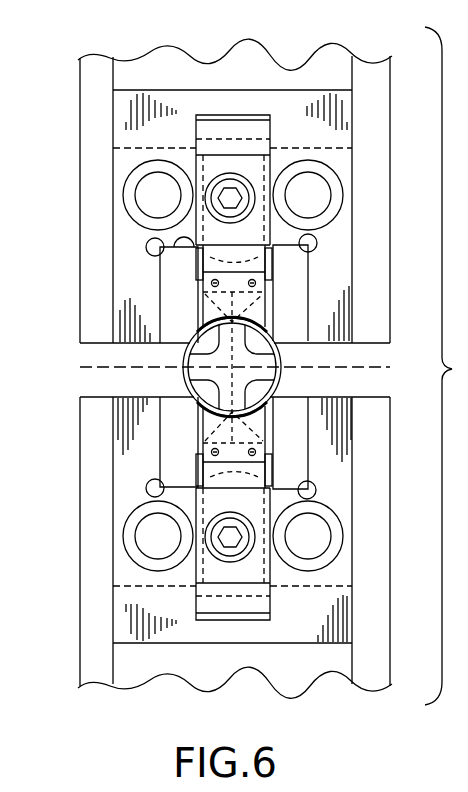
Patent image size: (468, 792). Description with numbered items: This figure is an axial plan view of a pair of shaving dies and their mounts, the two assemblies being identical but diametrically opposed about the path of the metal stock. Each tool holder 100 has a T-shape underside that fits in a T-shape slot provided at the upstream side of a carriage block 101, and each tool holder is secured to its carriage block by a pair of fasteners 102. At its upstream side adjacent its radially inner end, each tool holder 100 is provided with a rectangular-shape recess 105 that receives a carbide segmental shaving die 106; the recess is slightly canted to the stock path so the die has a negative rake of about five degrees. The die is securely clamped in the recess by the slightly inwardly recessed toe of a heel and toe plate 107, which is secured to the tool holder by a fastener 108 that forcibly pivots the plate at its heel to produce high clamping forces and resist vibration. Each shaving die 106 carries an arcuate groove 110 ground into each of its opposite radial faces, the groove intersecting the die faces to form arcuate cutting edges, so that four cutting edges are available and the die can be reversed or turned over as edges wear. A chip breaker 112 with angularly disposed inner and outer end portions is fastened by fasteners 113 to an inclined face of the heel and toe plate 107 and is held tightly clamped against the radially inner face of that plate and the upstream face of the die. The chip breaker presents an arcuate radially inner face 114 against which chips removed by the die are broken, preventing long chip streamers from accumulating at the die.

The tool holder 100 is at (238, 89).
The carriage block 101 is at (303, 55).
The fasteners 102 is at (156, 198).
The recess 105 is at (198, 250).
The shaving die 106 is at (293, 273).
The heel and toe plate 107 is at (273, 601).
The fastener 108 is at (230, 565).
The arcuate groove 110 is at (196, 240).
The chip breaker 112 is at (289, 305).
The fasteners 113 is at (199, 456).
The arcuate radially inner face 114 is at (185, 355).